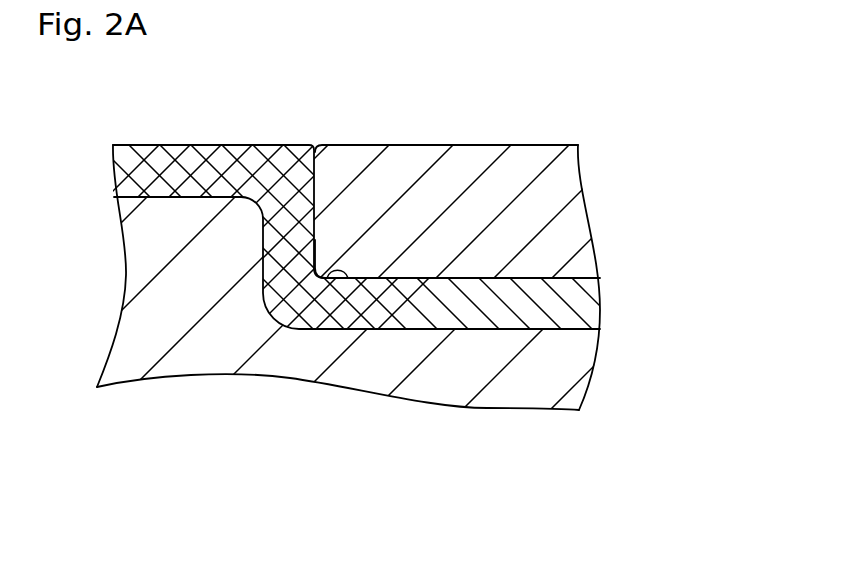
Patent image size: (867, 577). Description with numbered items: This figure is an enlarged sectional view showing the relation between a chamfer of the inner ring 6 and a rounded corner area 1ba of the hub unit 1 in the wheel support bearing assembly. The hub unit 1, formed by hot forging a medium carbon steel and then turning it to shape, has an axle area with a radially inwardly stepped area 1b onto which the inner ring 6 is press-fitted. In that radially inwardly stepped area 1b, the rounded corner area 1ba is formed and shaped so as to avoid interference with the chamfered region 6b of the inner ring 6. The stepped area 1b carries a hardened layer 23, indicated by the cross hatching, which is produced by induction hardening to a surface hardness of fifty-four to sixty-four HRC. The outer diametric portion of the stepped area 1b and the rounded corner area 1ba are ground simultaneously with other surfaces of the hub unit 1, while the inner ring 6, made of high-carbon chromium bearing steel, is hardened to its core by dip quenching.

The hub unit 1 is at (138, 240).
The radially inwardly stepped area 1b is at (493, 352).
The rounded corner area 1ba is at (348, 282).
The hardened layer 23 is at (538, 302).
The inner ring 6 is at (545, 212).
The chamfered region 6b is at (320, 275).